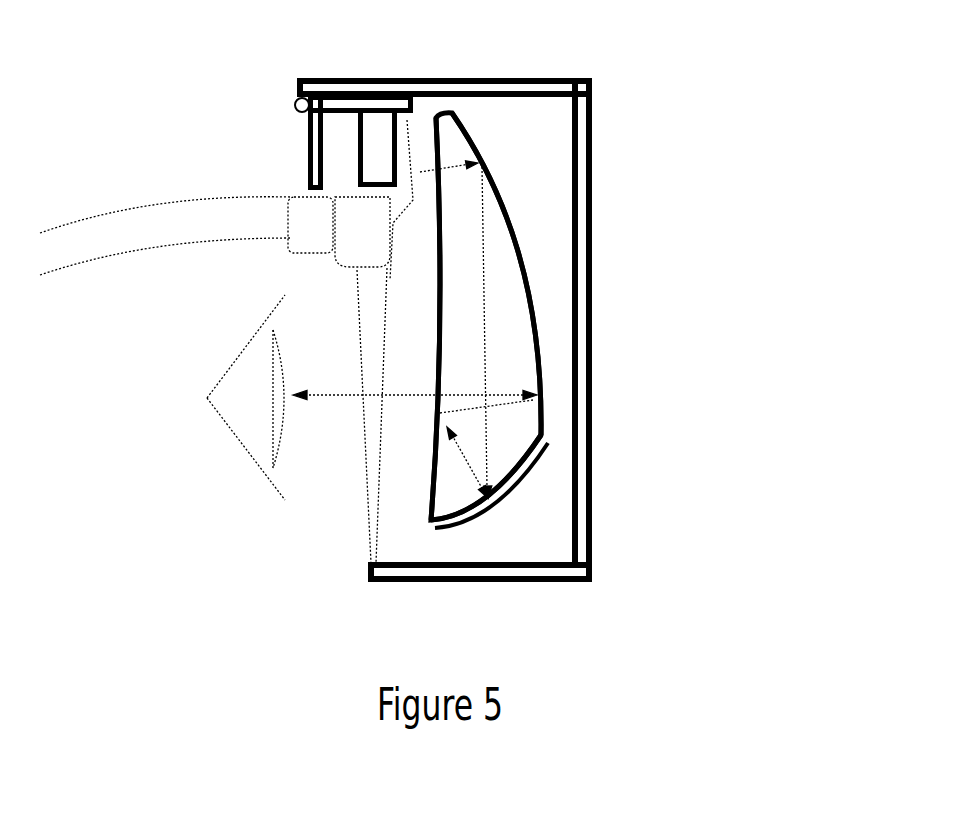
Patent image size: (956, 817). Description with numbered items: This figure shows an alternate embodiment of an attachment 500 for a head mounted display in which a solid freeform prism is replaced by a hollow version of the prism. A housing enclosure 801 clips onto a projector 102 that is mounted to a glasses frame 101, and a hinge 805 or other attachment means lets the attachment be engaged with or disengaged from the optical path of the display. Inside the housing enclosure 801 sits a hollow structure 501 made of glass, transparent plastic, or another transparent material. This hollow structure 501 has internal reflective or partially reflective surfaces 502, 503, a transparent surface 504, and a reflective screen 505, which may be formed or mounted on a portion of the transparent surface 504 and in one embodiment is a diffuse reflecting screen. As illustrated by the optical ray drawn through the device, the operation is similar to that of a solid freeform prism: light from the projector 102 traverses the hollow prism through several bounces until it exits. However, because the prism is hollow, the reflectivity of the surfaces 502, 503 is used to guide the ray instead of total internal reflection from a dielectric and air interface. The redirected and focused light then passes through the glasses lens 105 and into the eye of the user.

The glasses frame 101 is at (218, 251).
The projector 102 is at (343, 170).
The glasses lens 105 is at (372, 525).
The attachment 500 is at (632, 284).
The hollow structure 501 is at (500, 247).
The reflective or partially reflective surface 502 is at (538, 290).
The reflective or partially reflective surface 503 is at (438, 320).
The transparent surface 504 is at (545, 437).
The reflective screen 505 is at (548, 450).
The housing enclosure 801 is at (610, 531).
The hinge 805 is at (298, 100).